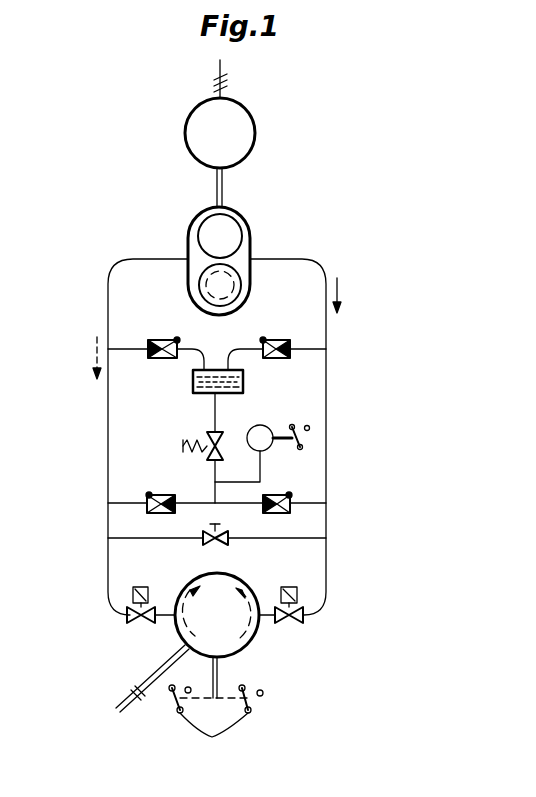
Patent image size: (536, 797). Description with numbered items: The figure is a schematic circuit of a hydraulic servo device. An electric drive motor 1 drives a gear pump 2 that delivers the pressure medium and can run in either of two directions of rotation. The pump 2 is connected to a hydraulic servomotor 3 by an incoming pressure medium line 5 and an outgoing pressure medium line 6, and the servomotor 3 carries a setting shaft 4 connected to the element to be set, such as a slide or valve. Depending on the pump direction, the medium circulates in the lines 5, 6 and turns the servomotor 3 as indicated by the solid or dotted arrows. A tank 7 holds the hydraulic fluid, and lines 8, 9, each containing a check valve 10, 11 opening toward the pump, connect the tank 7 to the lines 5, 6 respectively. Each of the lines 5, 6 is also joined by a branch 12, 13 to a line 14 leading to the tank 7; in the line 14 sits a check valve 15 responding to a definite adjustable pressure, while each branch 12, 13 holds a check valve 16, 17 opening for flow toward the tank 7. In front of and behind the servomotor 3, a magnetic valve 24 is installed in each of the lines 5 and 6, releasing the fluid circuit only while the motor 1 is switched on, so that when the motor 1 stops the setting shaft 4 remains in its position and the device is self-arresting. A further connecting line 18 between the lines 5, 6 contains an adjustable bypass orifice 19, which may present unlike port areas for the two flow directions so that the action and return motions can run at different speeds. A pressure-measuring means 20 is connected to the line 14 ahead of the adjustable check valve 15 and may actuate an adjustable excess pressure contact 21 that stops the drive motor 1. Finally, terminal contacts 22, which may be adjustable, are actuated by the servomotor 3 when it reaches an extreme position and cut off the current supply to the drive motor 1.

The electric drive motor 1 is at (243, 128).
The gear pump 2 is at (237, 236).
The hydraulic servomotor 3 is at (255, 632).
The setting shaft 4 is at (127, 707).
The pressure medium line 5 is at (320, 270).
The pressure medium line 6 is at (132, 259).
The tank 7 is at (246, 376).
The line 8 is at (253, 349).
The line 9 is at (190, 346).
The check valve 10 is at (290, 358).
The check valve 11 is at (147, 343).
The branch 12 is at (237, 505).
The branch 13 is at (108, 504).
The line 14 is at (213, 407).
The check valve 15 is at (196, 457).
The check valve 16 is at (287, 515).
The check valve 17 is at (147, 508).
The connecting line 18 is at (122, 538).
The adjustable bypass orifice 19 is at (221, 542).
The pressure-measuring means 20 is at (275, 446).
The adjustable excess pressure contact 21 is at (303, 443).
The terminal contacts 22 is at (216, 726).
The magnetic valve 24 is at (145, 618).